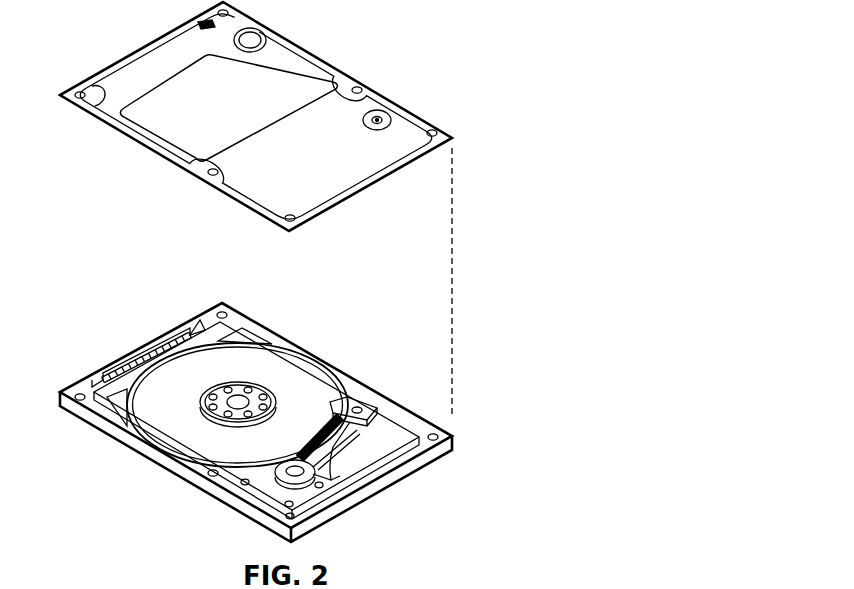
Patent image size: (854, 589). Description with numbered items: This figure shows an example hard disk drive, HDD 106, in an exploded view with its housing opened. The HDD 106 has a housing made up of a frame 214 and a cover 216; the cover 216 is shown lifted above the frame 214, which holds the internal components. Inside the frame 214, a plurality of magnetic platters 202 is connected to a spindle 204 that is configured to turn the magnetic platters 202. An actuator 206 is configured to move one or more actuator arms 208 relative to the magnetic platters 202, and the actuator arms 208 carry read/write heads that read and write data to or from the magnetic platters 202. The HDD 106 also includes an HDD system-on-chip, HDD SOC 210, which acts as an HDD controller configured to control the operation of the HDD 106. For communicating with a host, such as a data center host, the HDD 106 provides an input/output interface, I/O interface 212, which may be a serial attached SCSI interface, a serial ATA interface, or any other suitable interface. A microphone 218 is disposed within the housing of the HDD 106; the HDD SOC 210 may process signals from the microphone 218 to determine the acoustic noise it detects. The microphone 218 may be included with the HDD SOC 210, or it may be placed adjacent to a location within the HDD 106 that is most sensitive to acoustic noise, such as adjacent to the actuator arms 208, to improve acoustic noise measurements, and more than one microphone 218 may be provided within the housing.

The HDD 106 is at (611, 40).
The magnetic platters 202 is at (286, 365).
The spindle 204 is at (233, 403).
The actuator 206 is at (316, 502).
The actuator arms 208 is at (350, 392).
The HDD system-on-chip (SOC) 210 is at (393, 435).
The input/output (I/O) interface 212 is at (158, 362).
The frame 214 is at (365, 490).
The cover 216 is at (388, 148).
The microphone 218 is at (427, 460).